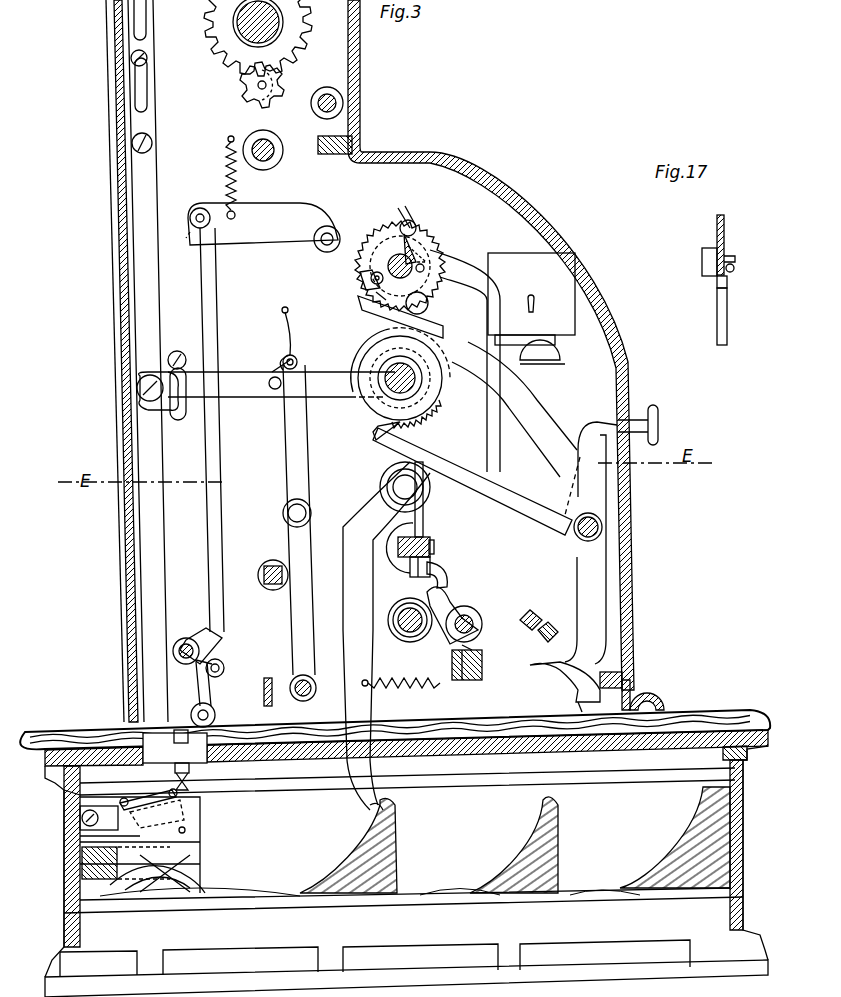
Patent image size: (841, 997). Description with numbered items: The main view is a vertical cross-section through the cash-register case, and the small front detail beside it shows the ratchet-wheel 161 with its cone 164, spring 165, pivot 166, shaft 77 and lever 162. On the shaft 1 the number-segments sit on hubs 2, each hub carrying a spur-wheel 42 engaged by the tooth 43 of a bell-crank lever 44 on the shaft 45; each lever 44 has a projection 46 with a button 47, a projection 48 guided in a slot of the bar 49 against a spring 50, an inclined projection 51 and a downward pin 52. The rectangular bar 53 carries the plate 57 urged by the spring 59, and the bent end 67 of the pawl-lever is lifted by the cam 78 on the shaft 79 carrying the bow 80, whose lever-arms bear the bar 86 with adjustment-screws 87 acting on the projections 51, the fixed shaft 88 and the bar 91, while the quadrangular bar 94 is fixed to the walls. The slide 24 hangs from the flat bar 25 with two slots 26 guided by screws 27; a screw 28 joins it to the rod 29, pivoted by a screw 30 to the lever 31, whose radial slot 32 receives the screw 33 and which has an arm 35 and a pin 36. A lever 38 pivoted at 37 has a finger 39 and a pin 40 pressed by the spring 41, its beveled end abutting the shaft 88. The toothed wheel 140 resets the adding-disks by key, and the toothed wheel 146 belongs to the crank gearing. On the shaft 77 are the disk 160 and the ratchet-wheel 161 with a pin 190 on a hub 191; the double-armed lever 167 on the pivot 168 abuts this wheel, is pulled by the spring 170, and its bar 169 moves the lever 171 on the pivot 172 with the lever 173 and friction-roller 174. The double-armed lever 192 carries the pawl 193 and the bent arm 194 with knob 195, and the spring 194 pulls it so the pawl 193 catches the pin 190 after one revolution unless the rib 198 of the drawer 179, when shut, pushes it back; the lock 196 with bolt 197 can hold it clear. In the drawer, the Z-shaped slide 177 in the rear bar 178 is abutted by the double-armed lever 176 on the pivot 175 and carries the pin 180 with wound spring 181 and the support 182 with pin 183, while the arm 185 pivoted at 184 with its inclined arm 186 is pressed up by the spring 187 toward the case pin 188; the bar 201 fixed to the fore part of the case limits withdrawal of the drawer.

In FIG. 3, the shaft 1 is at (378, 386).
In FIG. 3, the hub 2 is at (382, 400).
In FIG. 3, the slide 24 is at (116, 48).
In FIG. 3, the flat bar 25 is at (147, 40).
In FIG. 3, the slots 26 is at (147, 97).
In FIG. 3, the screws 27 is at (148, 61).
In FIG. 3, the screw 28 is at (153, 142).
In FIG. 3, the rod 29 is at (150, 172).
In FIG. 3, the screw 30 is at (152, 402).
In FIG. 3, the lever 31 is at (236, 372).
In FIG. 3, the radial slot 32 is at (178, 420).
In FIG. 3, the screw 33 is at (177, 350).
In FIG. 3, the arm 35 is at (364, 356).
In FIG. 3, the pin 36 is at (273, 390).
In FIG. 3, the pivot 37 is at (308, 508).
In FIG. 3, the lever 38 is at (306, 460).
In FIG. 3, the finger 39 is at (276, 360).
In FIG. 3, the pin 40 is at (298, 362).
In FIG. 3, the spring 41 is at (293, 344).
In FIG. 3, the spur-wheel 42 is at (430, 418).
In FIG. 3, the tooth 43 is at (372, 438).
In FIG. 3, the bell-crank lever 44 is at (514, 498).
In FIG. 3, the shaft 45 is at (574, 536).
In FIG. 3, the projection 46 is at (598, 423).
In FIG. 3, the button 47 is at (660, 420).
In FIG. 3, the projection 48 is at (580, 702).
In FIG. 3, the bar 49 is at (622, 696).
In FIG. 3, the springs 50 is at (611, 669).
In FIG. 3, the inclined projection 51 is at (565, 682).
In FIG. 3, the pin 52 is at (384, 474).
In FIG. 3, the bar 53 is at (410, 568).
In FIG. 3, the plate 57 is at (426, 500).
In FIG. 3, the spring 59 is at (432, 541).
In FIG. 3, the end of pawl-lever 67 is at (449, 574).
In FIG. 3, the shaft 77 is at (416, 240).
In FIG. 17, the shaft 77 is at (708, 276).
In FIG. 3, the cam 78 is at (448, 602).
In FIG. 3, the shaft 79 is at (477, 625).
In FIG. 3, the bow 80 is at (484, 668).
In FIG. 3, the bar 86 is at (530, 612).
In FIG. 3, the adjustment-screws 87 is at (540, 640).
In FIG. 3, the fixed shaft 88 is at (316, 686).
In FIG. 3, the bar 91 is at (270, 704).
In FIG. 3, the bar 94 is at (270, 592).
In FIG. 3, the toothed wheel 140 is at (280, 71).
In FIG. 3, the toothed wheel 146 is at (198, 696).
In FIG. 3, the disk 160 is at (425, 256).
In FIG. 3, the ratchet-wheel 161 is at (430, 259).
In FIG. 17, the ratchet-wheel 161 is at (724, 231).
In FIG. 3, the lever 162 is at (536, 392).
In FIG. 17, the lever 162 is at (728, 322).
In FIG. 3, the cone 164 is at (366, 290).
In FIG. 17, the cone 164 is at (735, 266).
In FIG. 3, the spring 165 is at (370, 282).
In FIG. 17, the spring 165 is at (736, 256).
In FIG. 3, the pivot 166 is at (374, 312).
In FIG. 17, the pivot 166 is at (730, 280).
In FIG. 3, the double-armed lever 167 is at (268, 226).
In FIG. 3, the pivot 168 is at (325, 252).
In FIG. 3, the bar 169 is at (214, 484).
In FIG. 3, the spring 170 is at (236, 178).
In FIG. 3, the lever 171 is at (196, 634).
In FIG. 3, the pivot 172 is at (184, 664).
In FIG. 3, the lever 173 is at (210, 658).
In FIG. 3, the friction-roller 174 is at (224, 668).
In FIG. 3, the pivot 175 is at (215, 715).
In FIG. 3, the double-armed lever 176 is at (192, 808).
In FIG. 3, the slide 177 is at (80, 858).
In FIG. 3, the rear bar 178 is at (198, 888).
In FIG. 3, the drawer 179 is at (395, 882).
In FIG. 3, the pin 180 is at (196, 870).
In FIG. 3, the spring 181 is at (65, 888).
In FIG. 3, the support 182 is at (65, 800).
In FIG. 3, the pin 183 is at (66, 820).
In FIG. 3, the pivot 184 is at (80, 840).
In FIG. 3, the arm 185 is at (106, 818).
In FIG. 3, the arm 186 is at (138, 797).
In FIG. 3, the spring 187 is at (196, 842).
In FIG. 3, the pin 188 is at (192, 784).
In FIG. 3, the pin 190 is at (426, 271).
In FIG. 3, the hub 191 is at (393, 487).
In FIG. 3, the double-armed lever 192 is at (478, 454).
In FIG. 3, the pawl 193 is at (424, 308).
In FIG. 3, the rectangularly-bent arm 194 is at (560, 364).
In FIG. 3, the knob 195 is at (555, 352).
In FIG. 3, the lock 196 is at (531, 299).
In FIG. 3, the bolt 197 is at (545, 326).
In FIG. 3, the rib 198 is at (390, 808).
In FIG. 3, the bar 201 is at (730, 762).